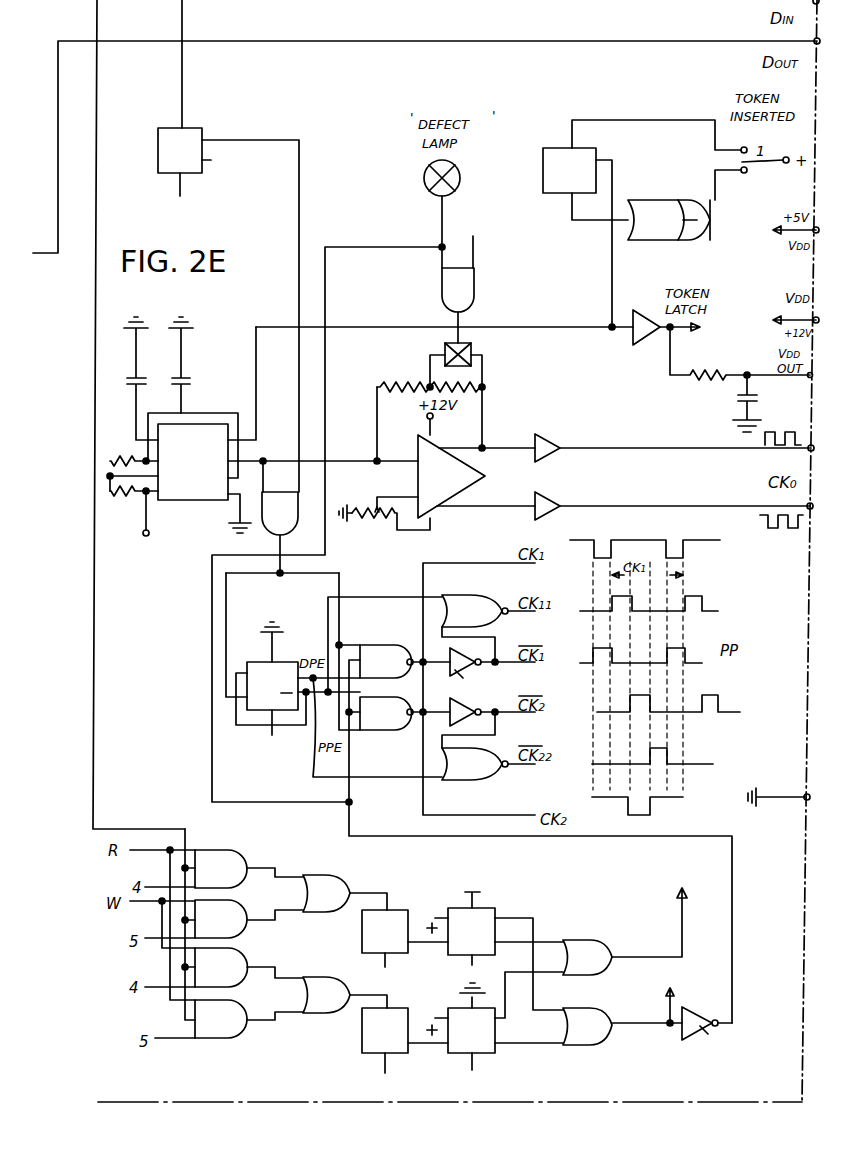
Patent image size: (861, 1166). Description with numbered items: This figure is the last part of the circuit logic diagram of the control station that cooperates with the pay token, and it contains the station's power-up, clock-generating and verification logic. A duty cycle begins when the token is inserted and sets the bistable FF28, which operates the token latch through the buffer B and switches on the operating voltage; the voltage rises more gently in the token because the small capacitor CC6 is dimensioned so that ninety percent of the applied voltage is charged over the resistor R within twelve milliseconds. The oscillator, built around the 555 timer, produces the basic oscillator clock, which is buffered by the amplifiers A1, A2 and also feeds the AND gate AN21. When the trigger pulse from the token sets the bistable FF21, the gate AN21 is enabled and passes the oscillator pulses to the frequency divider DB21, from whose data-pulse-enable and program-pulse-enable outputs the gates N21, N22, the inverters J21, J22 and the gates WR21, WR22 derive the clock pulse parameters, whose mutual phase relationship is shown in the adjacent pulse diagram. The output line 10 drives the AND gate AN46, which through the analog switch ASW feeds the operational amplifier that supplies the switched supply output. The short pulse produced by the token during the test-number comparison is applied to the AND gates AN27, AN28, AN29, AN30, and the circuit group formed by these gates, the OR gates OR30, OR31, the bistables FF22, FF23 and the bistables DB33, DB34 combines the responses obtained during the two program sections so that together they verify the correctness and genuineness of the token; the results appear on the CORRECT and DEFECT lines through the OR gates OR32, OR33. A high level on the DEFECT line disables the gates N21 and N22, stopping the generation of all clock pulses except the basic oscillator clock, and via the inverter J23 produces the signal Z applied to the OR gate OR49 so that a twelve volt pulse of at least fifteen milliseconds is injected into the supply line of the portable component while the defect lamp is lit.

The bistable FF21 is at (228, 300).
The signal line 10 is at (483, 219).
The AND gate AN46 is at (458, 305).
The analog switch ASW is at (470, 360).
The buffer amplifier A1 is at (674, 442).
The buffer amplifier A2 is at (674, 500).
The bistable FF28 is at (640, 223).
The OR gate OR49 is at (669, 214).
The buffer B (token latch) B is at (656, 327).
The resistor R is at (741, 353).
The small capacitor CC6 is at (763, 403).
The 555 timer oscillator 555 is at (179, 438).
The AND gate AN21 is at (280, 517).
The frequency divider DB21 is at (266, 667).
The gate N21 is at (405, 661).
The gate N22 is at (405, 713).
The inverter J21 is at (492, 672).
The inverter J22 is at (450, 702).
The NOR gate WR21 is at (488, 628).
The NOR gate WR22 is at (488, 746).
The AND gate AN27 is at (249, 869).
The AND gate AN28 is at (249, 919).
The AND gate AN29 is at (249, 967).
The AND gate AN30 is at (249, 1019).
The OR gate OR30 is at (345, 893).
The OR gate OR31 is at (345, 995).
The bistable FF22 is at (405, 942).
The bistable FF23 is at (405, 1045).
The bistable DB33 is at (495, 949).
The bistable DB34 is at (495, 1027).
The OR gate OR32 is at (625, 931).
The OR gate OR33 is at (622, 1008).
The inverter J23 is at (707, 1032).